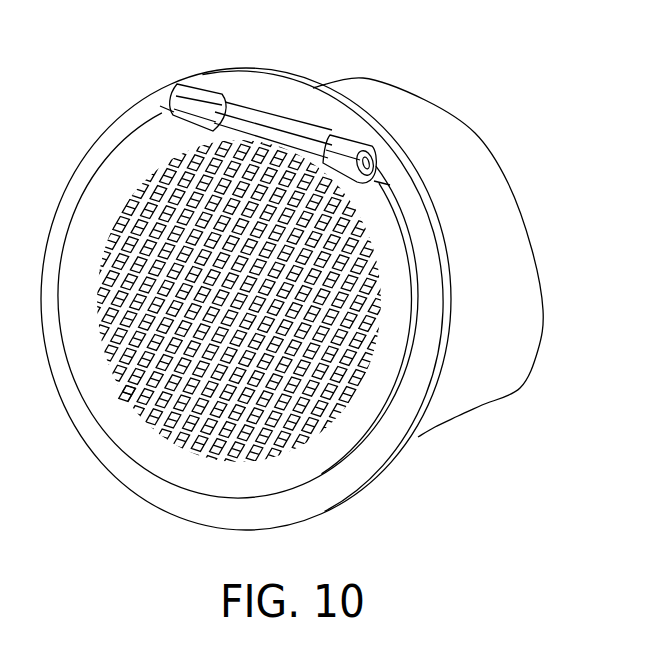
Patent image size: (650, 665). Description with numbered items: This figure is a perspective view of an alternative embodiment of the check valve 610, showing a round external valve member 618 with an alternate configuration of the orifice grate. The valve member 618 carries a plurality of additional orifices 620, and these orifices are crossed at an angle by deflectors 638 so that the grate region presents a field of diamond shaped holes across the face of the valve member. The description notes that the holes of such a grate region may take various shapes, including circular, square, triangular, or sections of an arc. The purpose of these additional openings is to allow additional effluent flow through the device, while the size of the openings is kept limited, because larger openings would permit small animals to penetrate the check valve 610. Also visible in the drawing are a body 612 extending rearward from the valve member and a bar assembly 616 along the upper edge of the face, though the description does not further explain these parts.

The check valve 610 is at (289, 276).
The cylindrical body 612 is at (503, 390).
The hinge bar 616 is at (177, 84).
The valve member 618 is at (355, 455).
The additional orifices 620 is at (118, 208).
The deflectors 638 is at (127, 387).